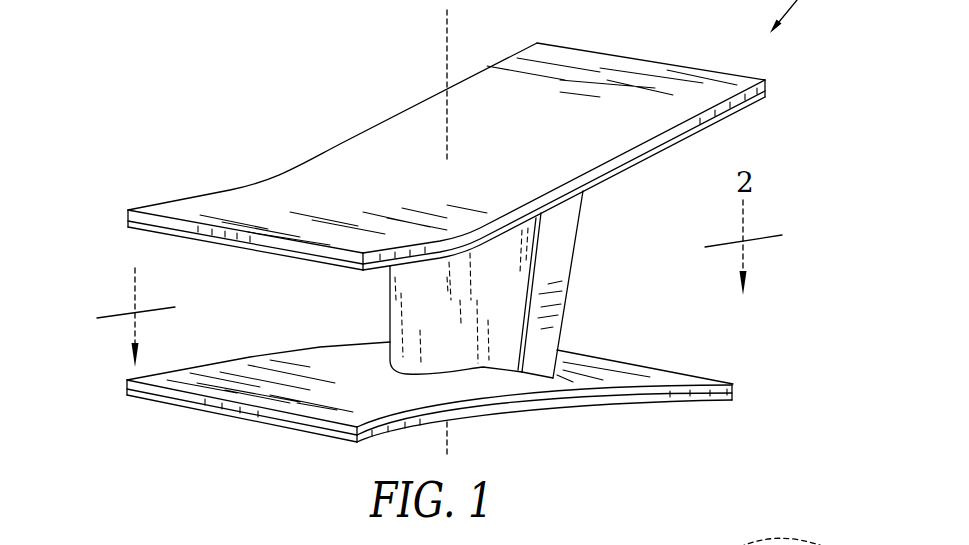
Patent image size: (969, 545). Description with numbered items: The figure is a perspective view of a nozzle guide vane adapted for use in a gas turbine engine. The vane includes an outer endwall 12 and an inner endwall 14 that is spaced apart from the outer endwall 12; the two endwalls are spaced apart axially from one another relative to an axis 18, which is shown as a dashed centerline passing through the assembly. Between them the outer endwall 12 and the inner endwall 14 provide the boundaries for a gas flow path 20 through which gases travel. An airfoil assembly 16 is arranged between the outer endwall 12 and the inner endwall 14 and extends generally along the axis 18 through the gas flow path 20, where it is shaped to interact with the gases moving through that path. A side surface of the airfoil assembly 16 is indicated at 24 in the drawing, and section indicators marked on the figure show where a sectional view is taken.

The outer endwall 12 is at (156, 121).
The inner endwall 14 is at (279, 449).
The airfoil assembly 16 is at (350, 306).
The axis 18 is at (446, 52).
The gas flow path 20 is at (104, 253).
The side face of post 24 is at (608, 258).